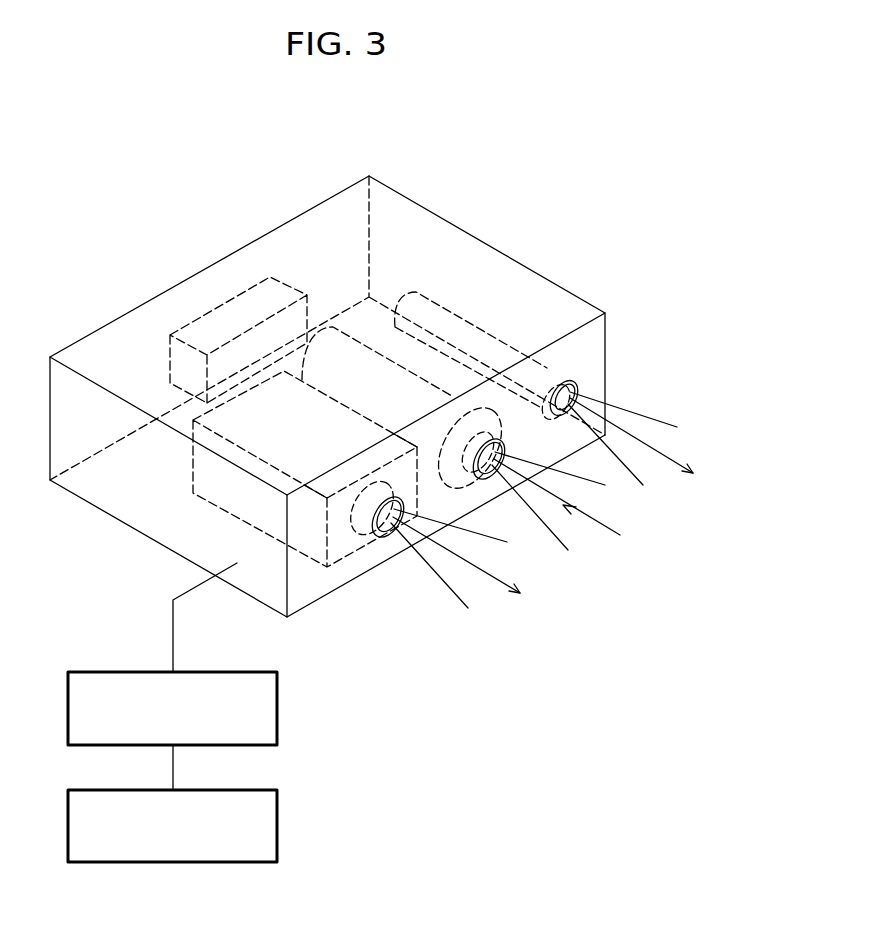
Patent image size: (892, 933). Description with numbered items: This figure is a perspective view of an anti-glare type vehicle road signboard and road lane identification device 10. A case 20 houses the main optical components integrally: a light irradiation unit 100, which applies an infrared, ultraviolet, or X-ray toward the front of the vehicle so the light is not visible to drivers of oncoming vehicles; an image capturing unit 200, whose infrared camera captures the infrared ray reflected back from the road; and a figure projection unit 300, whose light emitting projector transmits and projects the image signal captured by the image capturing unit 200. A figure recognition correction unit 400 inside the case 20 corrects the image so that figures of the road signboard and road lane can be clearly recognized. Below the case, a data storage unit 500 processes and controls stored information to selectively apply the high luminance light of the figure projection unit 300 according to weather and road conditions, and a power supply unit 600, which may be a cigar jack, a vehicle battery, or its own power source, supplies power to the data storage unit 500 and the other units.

The anti-glare type vehicle road signboard and road lane identification device 10 is at (195, 184).
The case 20 is at (420, 221).
The light irradiation unit 100 is at (460, 327).
The image capturing unit 200 is at (340, 350).
The figure projection unit 300 is at (213, 492).
The figure recognition correction unit 400 is at (225, 318).
The data storage unit 500 is at (278, 707).
The power supply unit 600 is at (278, 825).